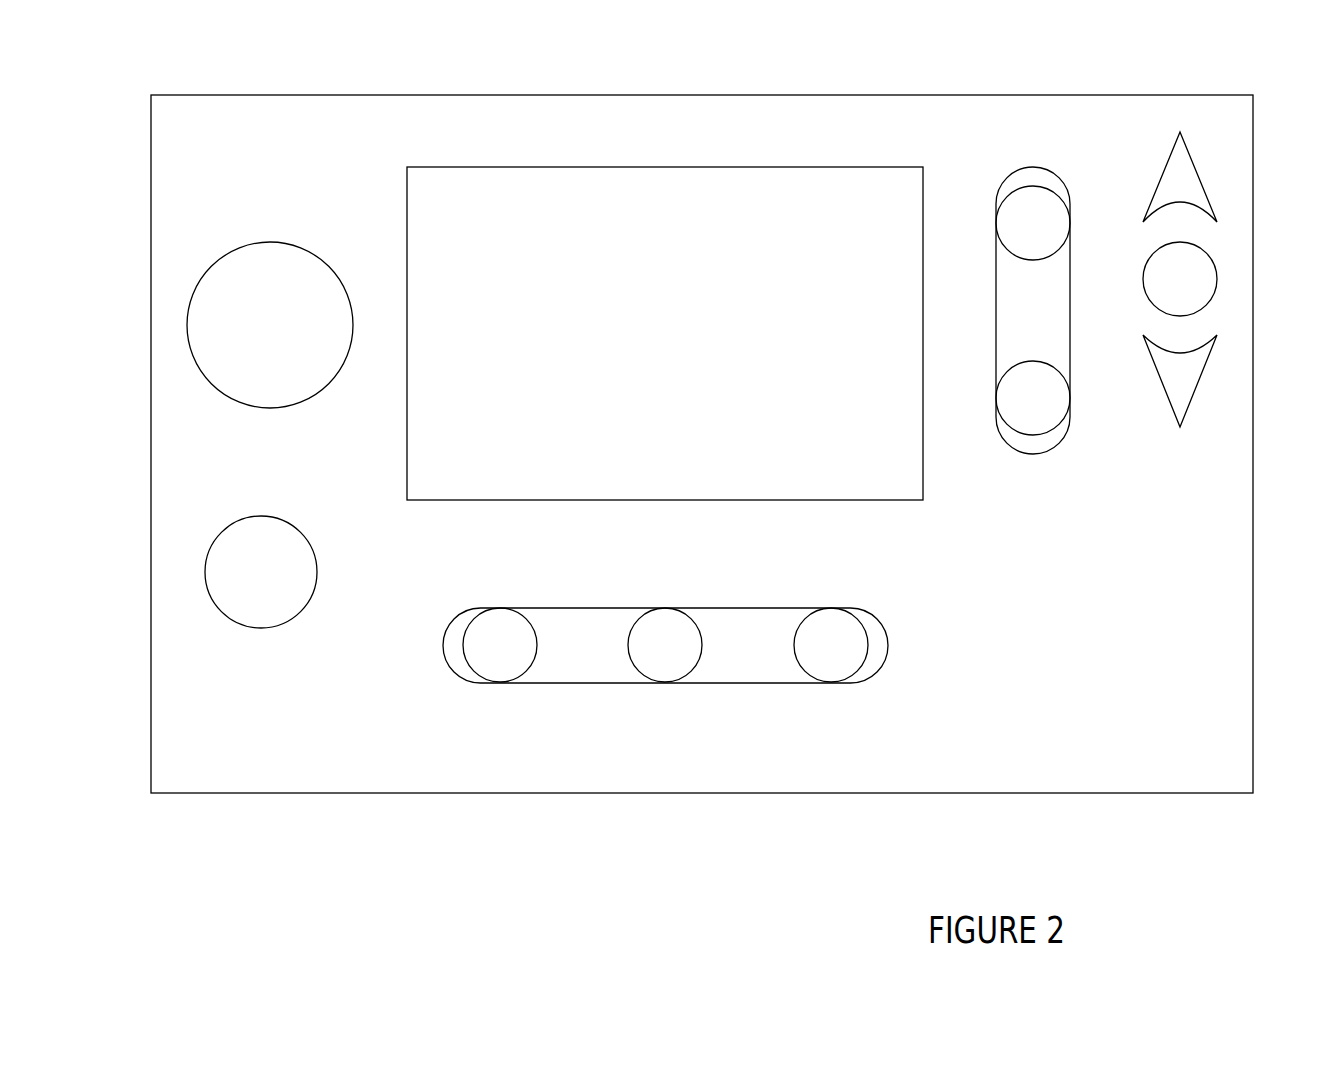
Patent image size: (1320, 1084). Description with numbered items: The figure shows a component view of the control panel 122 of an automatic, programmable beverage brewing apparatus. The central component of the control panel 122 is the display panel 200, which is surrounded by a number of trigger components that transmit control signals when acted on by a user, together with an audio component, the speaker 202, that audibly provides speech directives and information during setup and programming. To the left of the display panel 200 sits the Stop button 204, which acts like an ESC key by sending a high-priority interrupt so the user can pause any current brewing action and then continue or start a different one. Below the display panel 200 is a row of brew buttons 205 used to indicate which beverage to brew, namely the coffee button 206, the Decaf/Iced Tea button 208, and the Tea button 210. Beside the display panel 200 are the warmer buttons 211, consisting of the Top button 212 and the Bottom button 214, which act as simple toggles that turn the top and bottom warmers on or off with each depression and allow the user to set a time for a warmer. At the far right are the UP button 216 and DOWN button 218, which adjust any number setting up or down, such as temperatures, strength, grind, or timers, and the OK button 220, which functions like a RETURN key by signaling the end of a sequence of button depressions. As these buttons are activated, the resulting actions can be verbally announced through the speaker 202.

The control panel 122 is at (243, 795).
The display panel 200 is at (480, 167).
The speaker 202 is at (255, 243).
The Stop button 204 is at (240, 522).
The brew buttons 205 is at (741, 575).
The coffee button 206 is at (497, 610).
The Decaf/Iced Tea button 208 is at (628, 650).
The Tea button 210 is at (816, 608).
The warmer buttons 211 is at (1072, 160).
The Top button 212 is at (996, 225).
The Bottom button 214 is at (996, 392).
The UP button 216 is at (1200, 179).
The DOWN button 218 is at (1210, 358).
The OK button 220 is at (1217, 287).